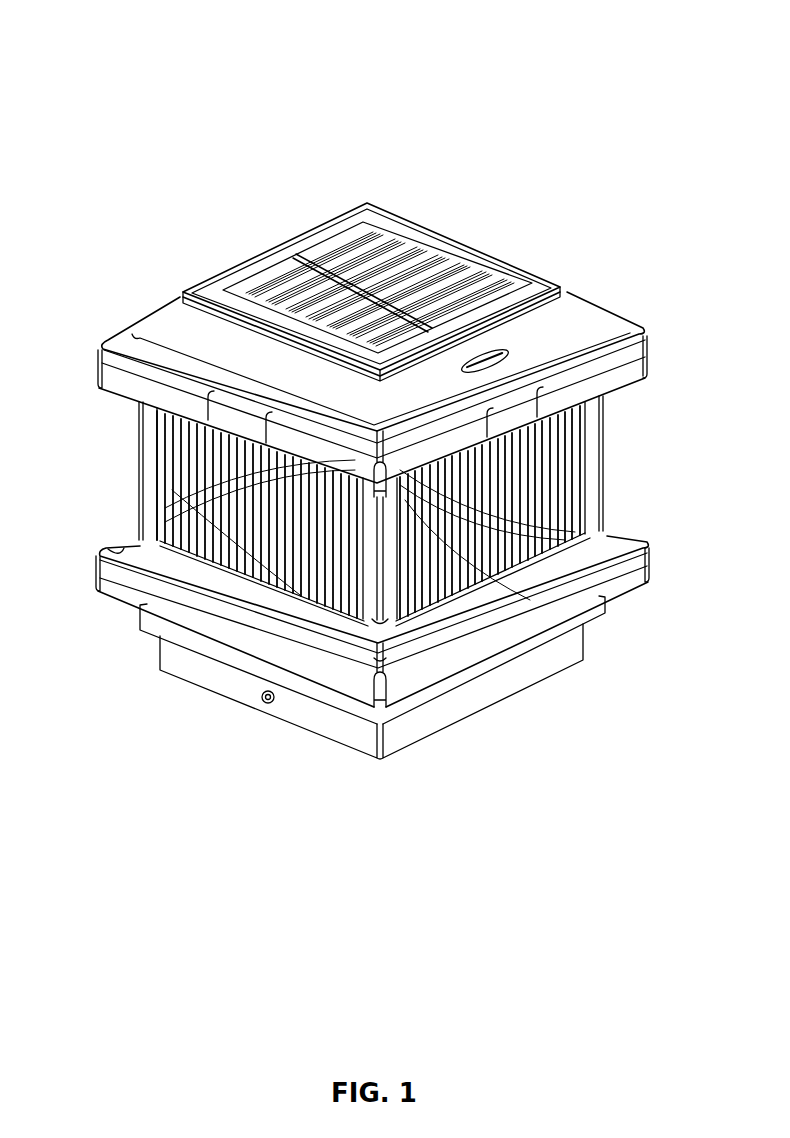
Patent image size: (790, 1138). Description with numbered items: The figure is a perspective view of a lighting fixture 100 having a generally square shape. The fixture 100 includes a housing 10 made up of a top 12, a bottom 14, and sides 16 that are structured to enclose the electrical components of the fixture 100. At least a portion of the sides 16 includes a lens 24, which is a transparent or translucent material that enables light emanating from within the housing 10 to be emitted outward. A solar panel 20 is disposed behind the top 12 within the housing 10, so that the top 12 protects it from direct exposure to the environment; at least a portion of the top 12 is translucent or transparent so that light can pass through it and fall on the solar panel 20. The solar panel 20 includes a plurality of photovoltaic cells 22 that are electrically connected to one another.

The lighting fixture 100 is at (379, 388).
The housing 10 is at (379, 440).
The top 12 is at (372, 394).
The bottom 14 is at (647, 550).
The sides 16 is at (605, 450).
The solar panel 20 is at (371, 251).
The photovoltaic cells 22 is at (338, 237).
The lens 24 is at (305, 478).